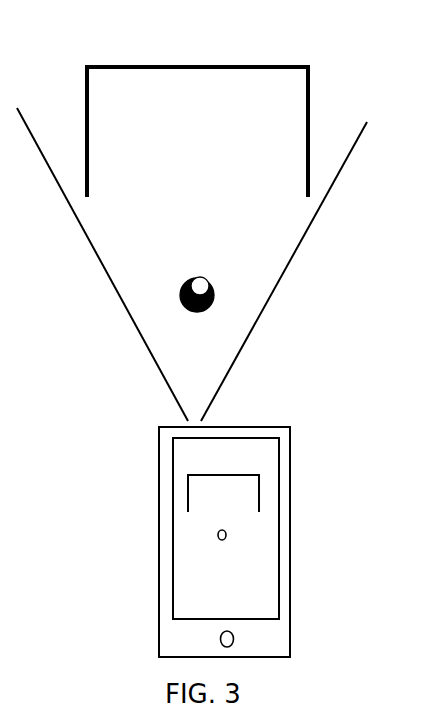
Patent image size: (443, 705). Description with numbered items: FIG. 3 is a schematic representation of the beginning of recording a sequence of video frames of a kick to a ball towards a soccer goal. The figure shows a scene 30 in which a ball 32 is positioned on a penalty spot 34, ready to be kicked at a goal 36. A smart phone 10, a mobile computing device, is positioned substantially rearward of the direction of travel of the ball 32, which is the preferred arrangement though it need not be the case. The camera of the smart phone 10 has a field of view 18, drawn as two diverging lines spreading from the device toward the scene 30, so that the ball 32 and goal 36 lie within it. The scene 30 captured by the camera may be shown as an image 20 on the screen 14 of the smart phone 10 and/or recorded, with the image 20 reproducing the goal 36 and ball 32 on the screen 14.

The smart phone 10 is at (290, 475).
The screen 14 is at (265, 567).
The field of view 18 is at (297, 255).
The image 20 is at (278, 459).
The scene 30 is at (354, 64).
The ball 32 is at (201, 277).
The penalty spot 34 is at (184, 303).
The goal 36 is at (86, 92).